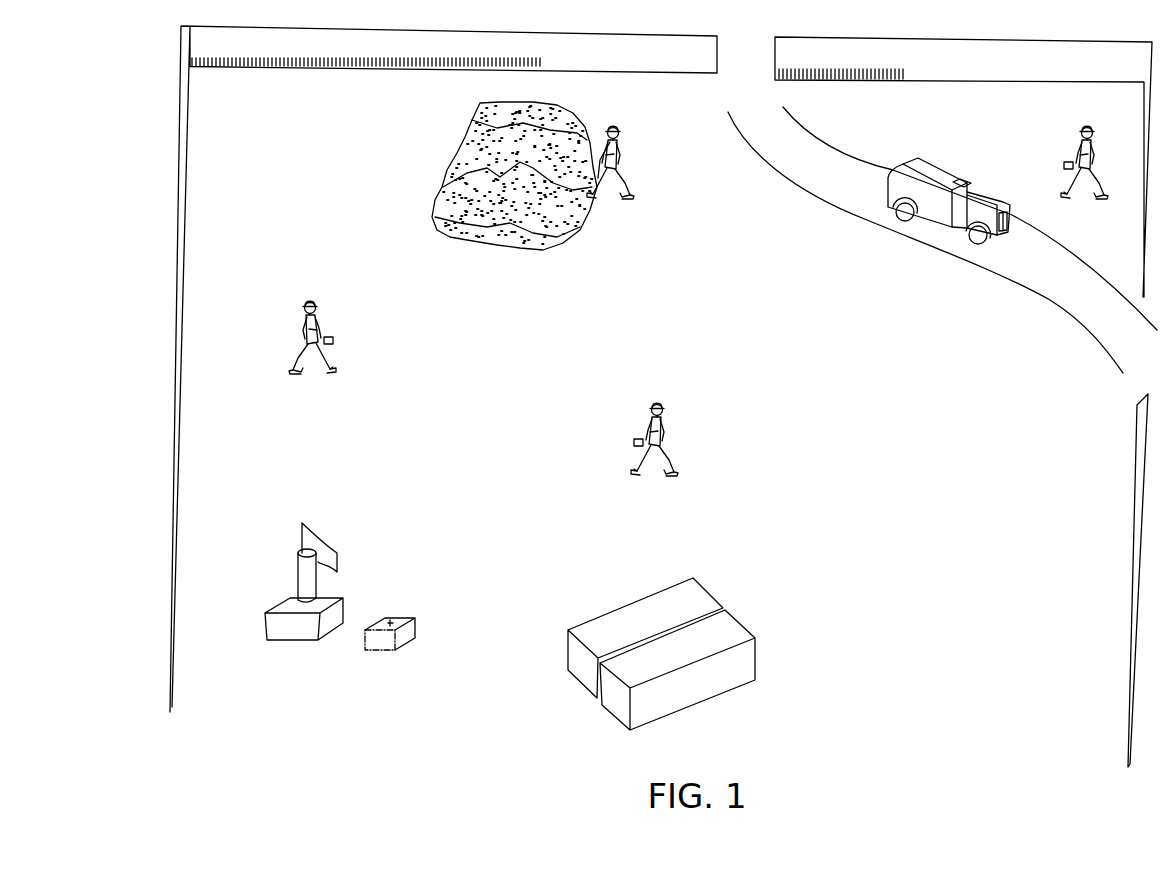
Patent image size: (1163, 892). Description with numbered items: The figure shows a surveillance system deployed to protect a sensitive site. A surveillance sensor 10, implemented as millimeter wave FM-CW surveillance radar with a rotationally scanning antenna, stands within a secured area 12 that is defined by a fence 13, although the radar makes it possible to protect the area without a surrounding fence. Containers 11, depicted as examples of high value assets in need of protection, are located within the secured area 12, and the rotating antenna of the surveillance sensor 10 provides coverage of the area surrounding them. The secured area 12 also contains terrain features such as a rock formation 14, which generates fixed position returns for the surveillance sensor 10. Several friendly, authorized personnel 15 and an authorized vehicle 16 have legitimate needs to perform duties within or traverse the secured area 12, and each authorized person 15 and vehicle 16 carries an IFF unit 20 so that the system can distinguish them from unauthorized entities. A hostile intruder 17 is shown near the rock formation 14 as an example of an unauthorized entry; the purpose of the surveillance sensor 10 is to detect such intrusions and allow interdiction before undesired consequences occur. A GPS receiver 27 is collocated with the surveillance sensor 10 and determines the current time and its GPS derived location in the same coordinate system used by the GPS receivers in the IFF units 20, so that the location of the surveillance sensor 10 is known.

The surveillance sensor 10 is at (302, 533).
The containers 11 is at (638, 602).
The secured area 12 is at (421, 444).
The fence 13 is at (260, 67).
The rock formation 14 is at (467, 120).
The authorized personnel 15 is at (310, 302).
The authorized vehicle 16 is at (918, 168).
The hostile intruder 17 is at (619, 157).
The IFF unit 20 is at (334, 341).
The GPS receiver 27 is at (417, 620).